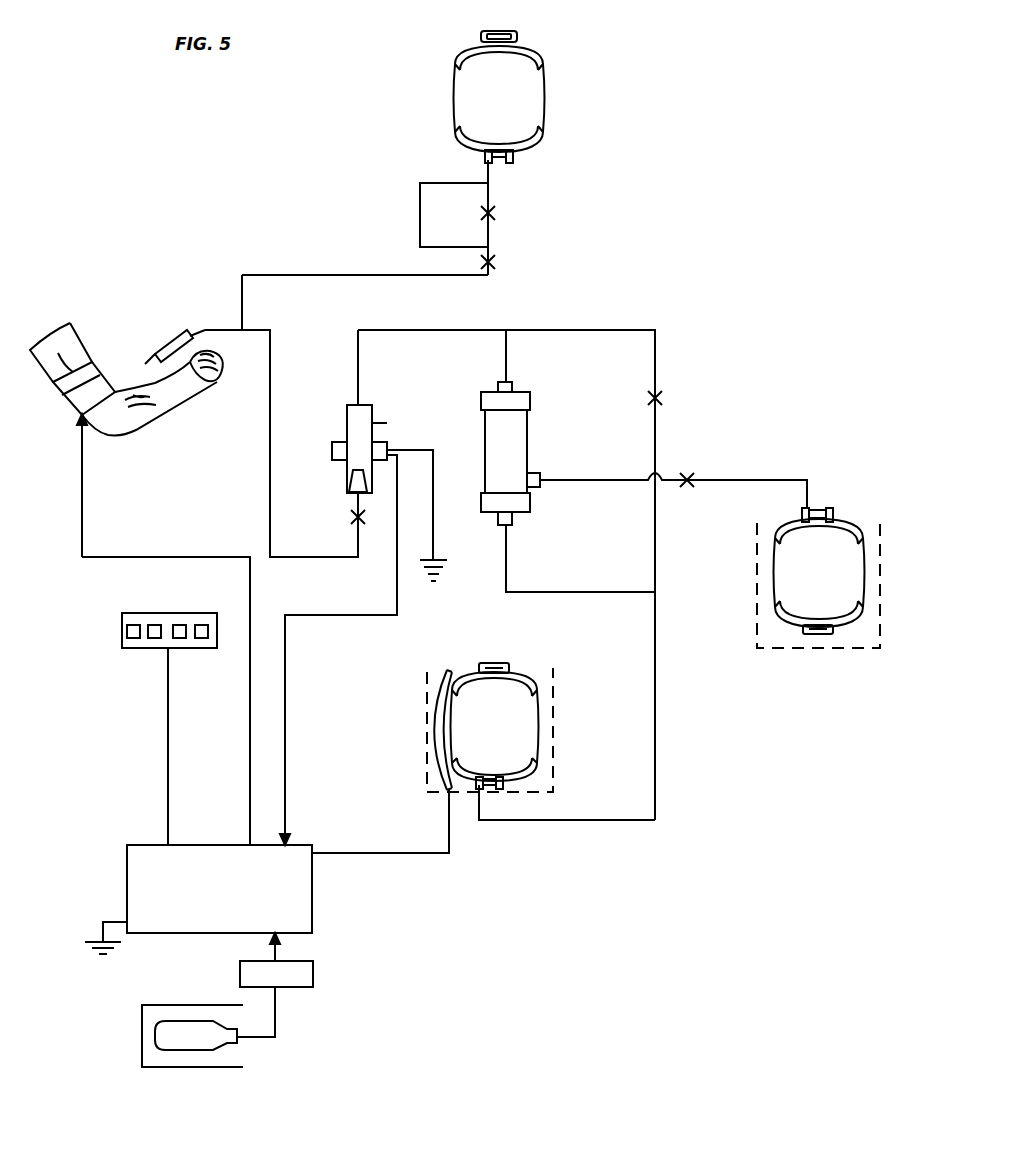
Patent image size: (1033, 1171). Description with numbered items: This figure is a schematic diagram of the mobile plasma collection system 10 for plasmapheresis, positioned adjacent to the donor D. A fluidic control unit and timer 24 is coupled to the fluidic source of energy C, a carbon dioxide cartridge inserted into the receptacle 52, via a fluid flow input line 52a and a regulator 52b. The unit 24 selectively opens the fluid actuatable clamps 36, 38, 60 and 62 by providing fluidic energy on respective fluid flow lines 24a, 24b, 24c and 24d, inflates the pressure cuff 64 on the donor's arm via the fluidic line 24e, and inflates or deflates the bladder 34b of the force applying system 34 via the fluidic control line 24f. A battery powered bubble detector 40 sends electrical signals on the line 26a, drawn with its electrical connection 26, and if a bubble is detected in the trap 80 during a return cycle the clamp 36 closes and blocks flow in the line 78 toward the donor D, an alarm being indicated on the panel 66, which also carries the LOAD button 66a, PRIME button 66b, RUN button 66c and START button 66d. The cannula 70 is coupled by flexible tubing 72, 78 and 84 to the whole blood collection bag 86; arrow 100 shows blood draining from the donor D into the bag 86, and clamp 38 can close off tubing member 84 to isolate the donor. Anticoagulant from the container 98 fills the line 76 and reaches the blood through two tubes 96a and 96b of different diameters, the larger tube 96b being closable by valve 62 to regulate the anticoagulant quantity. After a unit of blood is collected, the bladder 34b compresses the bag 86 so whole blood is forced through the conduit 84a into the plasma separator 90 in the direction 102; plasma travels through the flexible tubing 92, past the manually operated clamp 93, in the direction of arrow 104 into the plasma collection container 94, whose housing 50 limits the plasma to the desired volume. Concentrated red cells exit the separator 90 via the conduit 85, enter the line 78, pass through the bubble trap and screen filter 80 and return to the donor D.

The mobile plasma collection system 10 is at (710, 232).
The control unit and timer 24 is at (160, 933).
The fluid flow line 24a is at (346, 517).
The fluid flow line 24b is at (670, 398).
The fluid flow line 24c is at (503, 262).
The fluid flow line 24d is at (503, 213).
The fluidic line 24e is at (84, 490).
The fluidic control line 24f is at (360, 853).
The ground 26 is at (443, 558).
The electrical signal line 26a is at (286, 645).
The pressure assembly 34 is at (557, 672).
The inflatable bladder 34b is at (447, 672).
The fluid actuatable clamp 36 is at (364, 520).
The fluid actuatable clamp 38 is at (648, 398).
The battery powered bubble detector 40 is at (332, 451).
The housing 50 is at (757, 607).
The receptacle 52 is at (167, 1052).
The fluid flow input line 52a is at (278, 1000).
The regulator 52b is at (308, 972).
The fluid actuatable clamp 60 is at (484, 262).
The fluid actuatable clamp 62 is at (485, 214).
The inflatable pressure cuff 64 is at (103, 362).
The panel 66 is at (190, 620).
The LOAD button 66a is at (128, 632).
The PRIME button 66b is at (154, 637).
The RUN button 66c is at (168, 638).
The START button 66d is at (202, 638).
The cannula 70 is at (173, 338).
The flexible tubing 72 is at (216, 328).
The line 76 is at (276, 275).
The tubing 78 is at (272, 408).
The bubble trap and screen filter 80 is at (374, 423).
The tubing member 84 is at (657, 538).
The conduit 84a is at (556, 592).
The conduit 85 is at (506, 358).
The whole blood collection bag 86 is at (505, 733).
The plasma separator 90 is at (515, 430).
The flexible tubing 92 is at (600, 482).
The manually operated clamp 93 is at (687, 487).
The plasma collection container 94 is at (829, 578).
The tube 96a is at (420, 214).
The tube 96b is at (488, 195).
The anticoagulant container 98 is at (512, 99).
The arrow 100 is at (258, 508).
The direction arrow 102 is at (343, 372).
The arrow 104 is at (698, 465).
The donor D is at (162, 420).
The fluidic source of energy C is at (192, 1045).